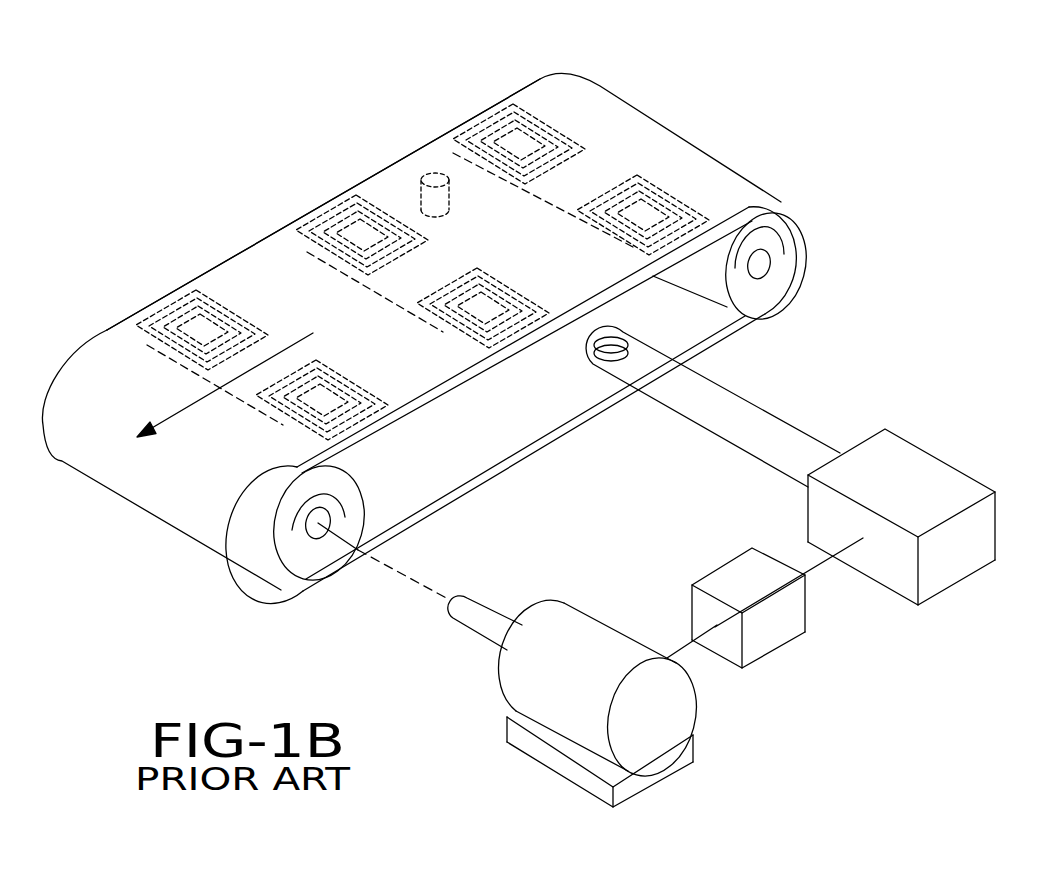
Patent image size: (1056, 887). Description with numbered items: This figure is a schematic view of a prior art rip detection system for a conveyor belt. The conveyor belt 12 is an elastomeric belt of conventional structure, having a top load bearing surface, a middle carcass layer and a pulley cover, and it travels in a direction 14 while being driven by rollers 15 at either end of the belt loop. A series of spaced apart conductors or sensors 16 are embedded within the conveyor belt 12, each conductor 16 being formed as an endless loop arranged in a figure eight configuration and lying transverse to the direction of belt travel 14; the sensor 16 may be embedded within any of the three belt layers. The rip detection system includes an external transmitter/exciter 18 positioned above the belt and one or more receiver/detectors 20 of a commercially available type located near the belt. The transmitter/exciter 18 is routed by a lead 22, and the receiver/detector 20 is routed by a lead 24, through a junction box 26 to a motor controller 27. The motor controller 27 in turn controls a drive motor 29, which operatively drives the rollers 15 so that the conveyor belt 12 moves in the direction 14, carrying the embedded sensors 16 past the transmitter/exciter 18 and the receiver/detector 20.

The conveyor belt 12 is at (642, 146).
The direction of belt travel 14 is at (193, 405).
The rollers 15 is at (770, 287).
The conductors or sensors 16 is at (477, 127).
The transmitter/exciter 18 is at (433, 172).
The receiver/detector 20 is at (594, 352).
The lead 22 is at (343, 157).
The lead 24 is at (818, 568).
The junction box 26 is at (915, 467).
The motor controller 27 is at (768, 628).
The drive motor 29 is at (567, 710).